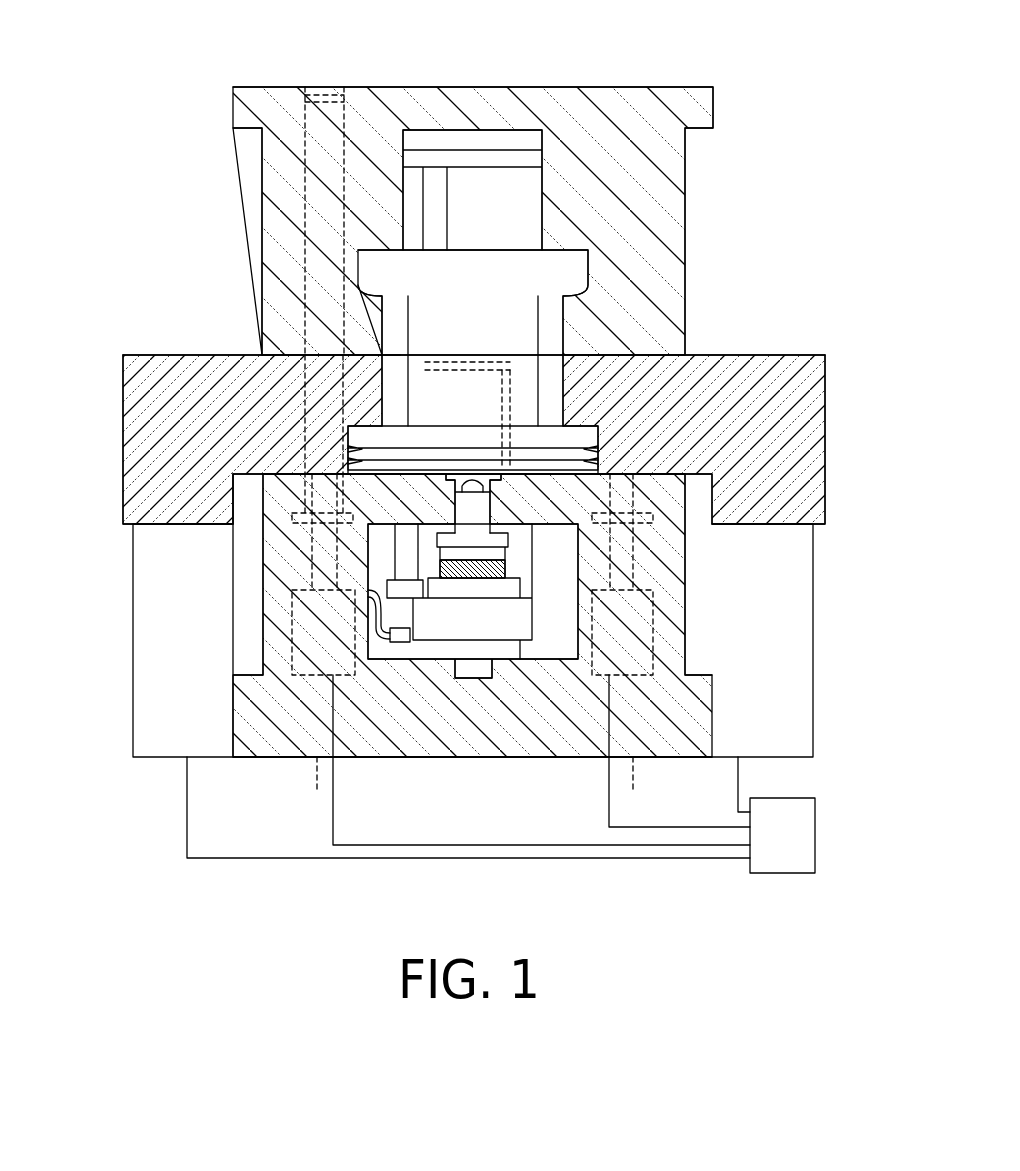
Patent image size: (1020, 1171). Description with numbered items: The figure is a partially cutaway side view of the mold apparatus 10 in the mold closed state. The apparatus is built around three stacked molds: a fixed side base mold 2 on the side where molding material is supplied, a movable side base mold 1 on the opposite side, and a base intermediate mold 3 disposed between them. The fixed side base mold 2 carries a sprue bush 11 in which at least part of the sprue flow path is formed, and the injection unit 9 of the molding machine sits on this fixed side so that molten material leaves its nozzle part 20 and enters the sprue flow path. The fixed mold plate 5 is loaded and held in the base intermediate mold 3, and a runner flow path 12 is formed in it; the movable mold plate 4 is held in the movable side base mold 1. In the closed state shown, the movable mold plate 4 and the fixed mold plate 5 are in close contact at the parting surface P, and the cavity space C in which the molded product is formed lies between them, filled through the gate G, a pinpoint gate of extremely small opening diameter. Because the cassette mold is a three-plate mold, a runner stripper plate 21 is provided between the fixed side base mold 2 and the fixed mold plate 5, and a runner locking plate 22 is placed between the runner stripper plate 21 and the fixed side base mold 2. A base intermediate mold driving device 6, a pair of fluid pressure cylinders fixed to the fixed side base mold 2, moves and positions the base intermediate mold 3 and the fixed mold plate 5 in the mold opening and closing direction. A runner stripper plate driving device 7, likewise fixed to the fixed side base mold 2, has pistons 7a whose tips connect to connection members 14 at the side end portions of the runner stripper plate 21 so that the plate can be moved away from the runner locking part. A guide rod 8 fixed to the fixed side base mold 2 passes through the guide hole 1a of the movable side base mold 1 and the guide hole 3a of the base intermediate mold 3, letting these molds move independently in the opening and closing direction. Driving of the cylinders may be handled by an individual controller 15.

The mold apparatus 10 is at (490, 33).
The movable side base mold 1 is at (260, 153).
The guide hole 1a is at (340, 200).
The movable mold plate 4 is at (420, 332).
The guide rod 8 is at (305, 306).
The fixed mold plate 5 is at (420, 390).
The base intermediate mold 3 is at (123, 393).
The guide hole 3a is at (300, 374).
The parting surface P is at (826, 355).
The cavity space C is at (487, 357).
The gate G is at (506, 372).
The runner flow path 12 is at (463, 440).
The connection member 14 is at (348, 455).
The runner stripper plate 21 is at (348, 457).
The runner locking plate 22 is at (348, 466).
The fixed side base mold 2 is at (485, 757).
The base intermediate mold driving device 6 is at (133, 627).
The nozzle part 20 is at (480, 513).
The sprue bush 11 is at (483, 478).
The piston 7a is at (312, 558).
The runner stripper plate driving device 7 is at (317, 757).
The injection unit 9 is at (510, 565).
The individual controller 15 is at (812, 842).